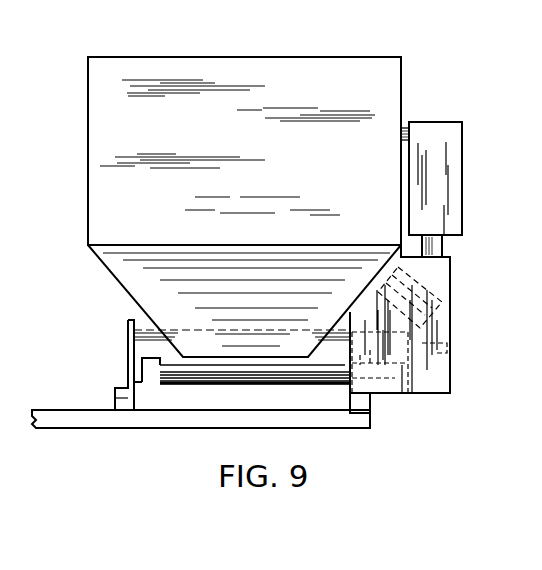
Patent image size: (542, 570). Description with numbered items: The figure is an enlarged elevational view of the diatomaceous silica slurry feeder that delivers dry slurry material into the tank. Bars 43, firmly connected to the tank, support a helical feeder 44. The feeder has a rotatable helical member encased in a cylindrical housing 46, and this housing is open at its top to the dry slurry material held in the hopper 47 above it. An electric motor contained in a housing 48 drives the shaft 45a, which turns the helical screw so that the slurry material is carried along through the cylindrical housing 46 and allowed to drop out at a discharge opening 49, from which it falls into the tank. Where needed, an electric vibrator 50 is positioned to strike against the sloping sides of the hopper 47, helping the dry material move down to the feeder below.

The bars 43 is at (90, 417).
The helical feeder 44 is at (120, 355).
The shaft 45a is at (392, 393).
The cylindrical housing 46 is at (237, 362).
The hopper 47 is at (373, 70).
The housing 48 is at (442, 132).
The discharge opening 49 is at (152, 370).
The electric vibrator 50 is at (430, 278).